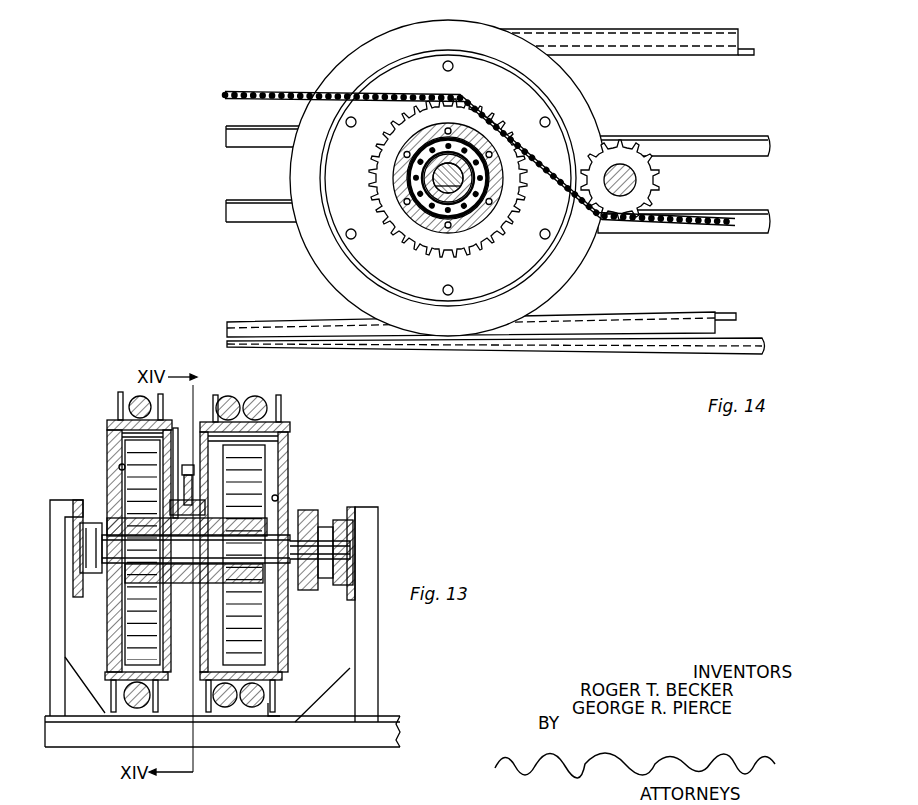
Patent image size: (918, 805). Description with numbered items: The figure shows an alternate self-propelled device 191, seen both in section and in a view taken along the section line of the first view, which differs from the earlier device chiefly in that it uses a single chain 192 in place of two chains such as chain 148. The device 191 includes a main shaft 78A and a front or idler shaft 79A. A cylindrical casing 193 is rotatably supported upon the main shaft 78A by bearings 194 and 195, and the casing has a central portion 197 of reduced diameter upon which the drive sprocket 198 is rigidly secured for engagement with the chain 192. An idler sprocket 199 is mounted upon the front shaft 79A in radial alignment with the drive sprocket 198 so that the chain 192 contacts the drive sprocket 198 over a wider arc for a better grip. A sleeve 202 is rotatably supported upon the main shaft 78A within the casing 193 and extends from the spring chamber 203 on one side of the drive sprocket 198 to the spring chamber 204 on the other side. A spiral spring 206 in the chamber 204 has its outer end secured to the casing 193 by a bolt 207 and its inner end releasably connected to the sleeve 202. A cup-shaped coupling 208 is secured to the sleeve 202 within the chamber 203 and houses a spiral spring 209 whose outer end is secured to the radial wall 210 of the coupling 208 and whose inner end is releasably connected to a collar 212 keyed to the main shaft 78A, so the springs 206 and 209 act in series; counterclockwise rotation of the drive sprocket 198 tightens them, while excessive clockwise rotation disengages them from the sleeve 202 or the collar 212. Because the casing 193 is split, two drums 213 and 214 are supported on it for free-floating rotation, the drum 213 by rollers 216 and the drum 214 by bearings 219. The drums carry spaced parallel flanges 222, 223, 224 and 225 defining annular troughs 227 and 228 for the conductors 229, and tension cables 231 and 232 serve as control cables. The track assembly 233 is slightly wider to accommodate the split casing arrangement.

In FIG. 14, the chain 148 is at (250, 90).
In FIG. 14, the self-propelled device 191 is at (298, 268).
In FIG. 13, the self-propelled device 191 is at (310, 446).
In FIG. 14, the chain 192 is at (712, 226).
In FIG. 13, the chain 192 is at (185, 463).
In FIG. 14, the cylindrical casing 193 is at (560, 90).
In FIG. 13, the cylindrical casing 193 is at (305, 485).
In FIG. 13, the bearing 194 is at (286, 568).
In FIG. 13, the bearing 195 is at (125, 540).
In FIG. 13, the central portion 197 is at (175, 489).
In FIG. 14, the drive sprocket 198 is at (370, 172).
In FIG. 13, the drive sprocket 198 is at (203, 488).
In FIG. 14, the idler sprocket 199 is at (632, 156).
In FIG. 13, the sleeve 202 is at (133, 573).
In FIG. 13, the spring chamber 203 is at (278, 498).
In FIG. 13, the spring chamber 204 is at (121, 466).
In FIG. 13, the spiral spring 206 is at (135, 503).
In FIG. 13, the bolt 207 is at (108, 440).
In FIG. 13, the cup-shaped coupling 208 is at (213, 658).
In FIG. 13, the spiral spring 209 is at (250, 618).
In FIG. 13, the radial wall 210 is at (275, 683).
In FIG. 13, the collar 212 is at (255, 535).
In FIG. 13, the drum 213 is at (298, 424).
In FIG. 13, the drum 214 is at (113, 418).
In FIG. 13, the rollers 216 is at (306, 675).
In FIG. 13, the bearings 219 is at (216, 395).
In FIG. 13, the flange 222 is at (264, 396).
In FIG. 13, the flange 223 is at (236, 396).
In FIG. 14, the flange 224 is at (468, 33).
In FIG. 13, the flange 224 is at (163, 392).
In FIG. 13, the flange 225 is at (120, 392).
In FIG. 13, the annular trough 227 is at (272, 707).
In FIG. 13, the annular trough 228 is at (122, 712).
In FIG. 14, the conductors 229 is at (620, 36).
In FIG. 13, the conductors 229 is at (138, 707).
In FIG. 13, the tension cable 231 is at (282, 410).
In FIG. 14, the tension cable 232 is at (742, 56).
In FIG. 13, the tension cable 232 is at (142, 392).
In FIG. 13, the track assembly 233 is at (392, 551).
In FIG. 14, the main shaft 78A is at (440, 205).
In FIG. 13, the main shaft 78A is at (80, 547).
In FIG. 14, the front shaft 79A is at (636, 181).